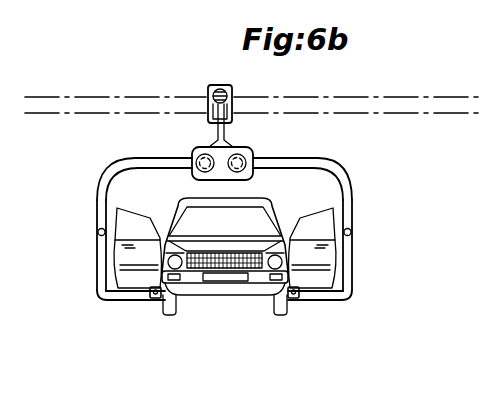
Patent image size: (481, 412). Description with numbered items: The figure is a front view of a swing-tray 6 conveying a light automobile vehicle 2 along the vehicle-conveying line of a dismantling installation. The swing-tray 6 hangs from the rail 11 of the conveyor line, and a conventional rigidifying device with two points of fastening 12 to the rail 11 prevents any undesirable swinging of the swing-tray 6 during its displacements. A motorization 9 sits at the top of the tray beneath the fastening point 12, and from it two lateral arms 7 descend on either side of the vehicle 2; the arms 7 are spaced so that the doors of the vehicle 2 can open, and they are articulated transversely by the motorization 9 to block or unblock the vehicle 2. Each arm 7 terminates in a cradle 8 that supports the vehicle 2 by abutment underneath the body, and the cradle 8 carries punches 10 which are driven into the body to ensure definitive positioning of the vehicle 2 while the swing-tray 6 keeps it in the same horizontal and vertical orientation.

The light automobile vehicle 2 is at (228, 276).
The swing-tray 6 is at (356, 184).
The lateral arm 7 is at (100, 265).
The cradle 8 is at (120, 300).
The motorization 9 is at (195, 158).
The punch 10 is at (155, 298).
The rail 11 is at (340, 97).
The point of fastening 12 is at (208, 102).